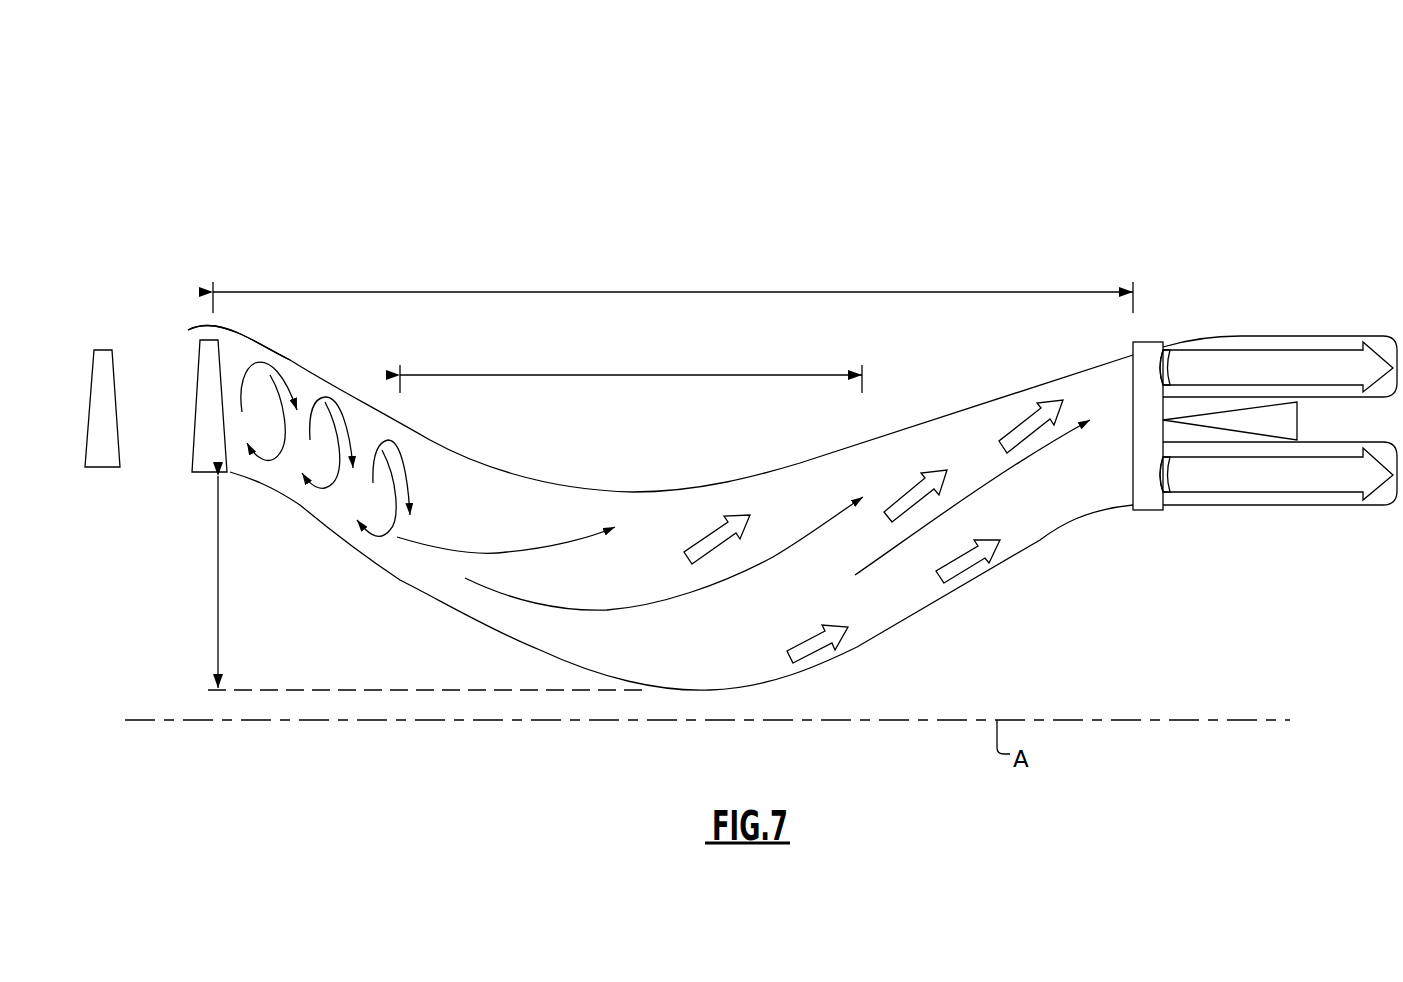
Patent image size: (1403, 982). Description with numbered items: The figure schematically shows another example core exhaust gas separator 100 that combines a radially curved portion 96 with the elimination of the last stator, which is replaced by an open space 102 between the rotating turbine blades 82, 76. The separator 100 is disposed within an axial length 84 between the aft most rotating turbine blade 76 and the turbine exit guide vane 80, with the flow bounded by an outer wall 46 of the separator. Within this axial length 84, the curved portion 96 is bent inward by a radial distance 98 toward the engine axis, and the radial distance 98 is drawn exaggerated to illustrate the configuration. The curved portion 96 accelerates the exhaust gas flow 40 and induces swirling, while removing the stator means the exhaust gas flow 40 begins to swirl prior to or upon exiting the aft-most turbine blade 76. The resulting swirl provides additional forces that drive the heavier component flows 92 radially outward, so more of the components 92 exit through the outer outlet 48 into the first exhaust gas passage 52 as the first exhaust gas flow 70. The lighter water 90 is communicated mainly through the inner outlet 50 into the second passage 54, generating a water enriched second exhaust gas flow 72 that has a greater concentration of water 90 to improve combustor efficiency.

The separator 100 is at (660, 385).
The exhaust gas flow 40 is at (283, 368).
The duct outer wall / upstream wall 46 is at (213, 322).
The outer outlet 48 is at (1163, 370).
The inner outlet 50 is at (1167, 482).
The first exhaust gas passage 52 is at (1272, 333).
The H2O rich exhaust passage 54 is at (1278, 510).
The first exhaust gas flow 70 is at (1233, 350).
The second exhaust gas flow 72 is at (1233, 493).
The aft most rotating turbine blade 76 is at (212, 463).
The turbine exit guide vane 80 is at (1150, 513).
The rotating turbine blade 82 is at (94, 455).
The axial length 84 is at (660, 292).
The water 90 is at (815, 643).
The components 92 is at (703, 542).
The curved portion 96 is at (642, 375).
The radial distance 98 is at (220, 560).
The open space 102 is at (150, 360).